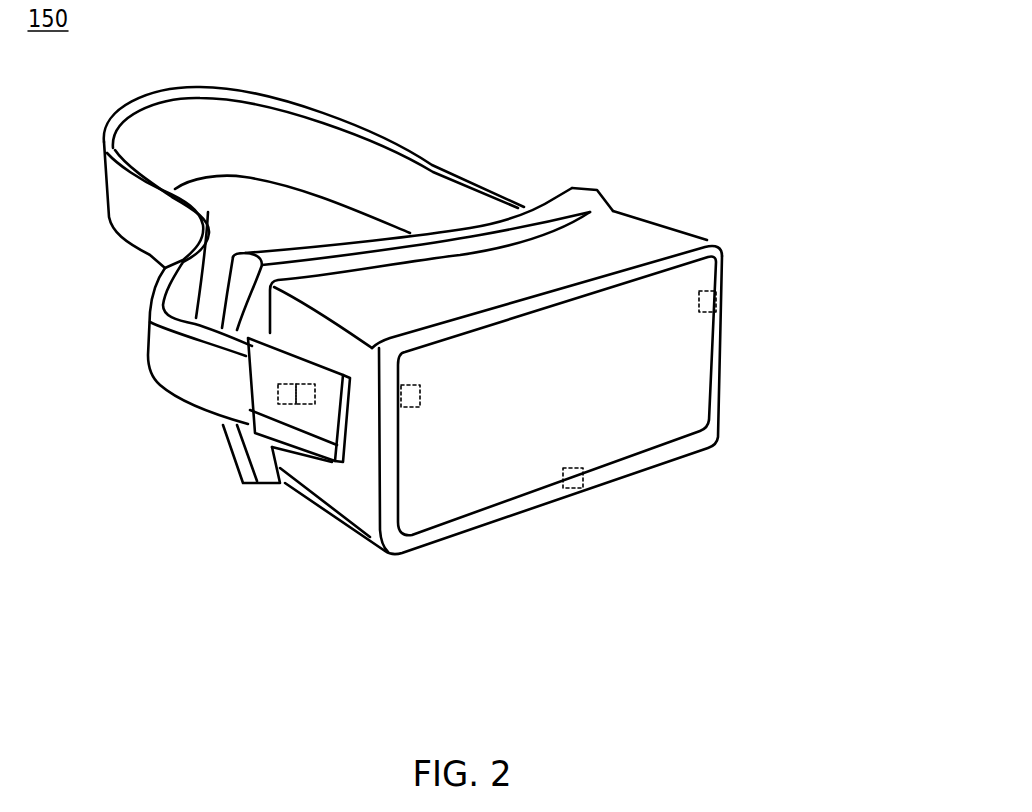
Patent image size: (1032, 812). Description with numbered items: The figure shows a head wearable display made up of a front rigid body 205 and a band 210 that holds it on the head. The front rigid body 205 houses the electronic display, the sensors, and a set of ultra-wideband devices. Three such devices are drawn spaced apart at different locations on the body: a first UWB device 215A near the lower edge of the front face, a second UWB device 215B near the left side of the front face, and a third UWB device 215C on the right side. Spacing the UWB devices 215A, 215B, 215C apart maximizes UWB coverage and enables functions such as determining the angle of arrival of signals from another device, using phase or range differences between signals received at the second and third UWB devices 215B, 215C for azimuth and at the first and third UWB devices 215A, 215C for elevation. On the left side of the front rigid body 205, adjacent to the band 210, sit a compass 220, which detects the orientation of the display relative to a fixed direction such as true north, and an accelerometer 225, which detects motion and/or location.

The front rigid body 205 is at (723, 242).
The band 210 is at (422, 157).
The first UWB device 215A is at (578, 488).
The second UWB device 215B is at (410, 409).
The third UWB device 215C is at (720, 304).
The compass 220 is at (277, 395).
The accelerometer 225 is at (303, 403).